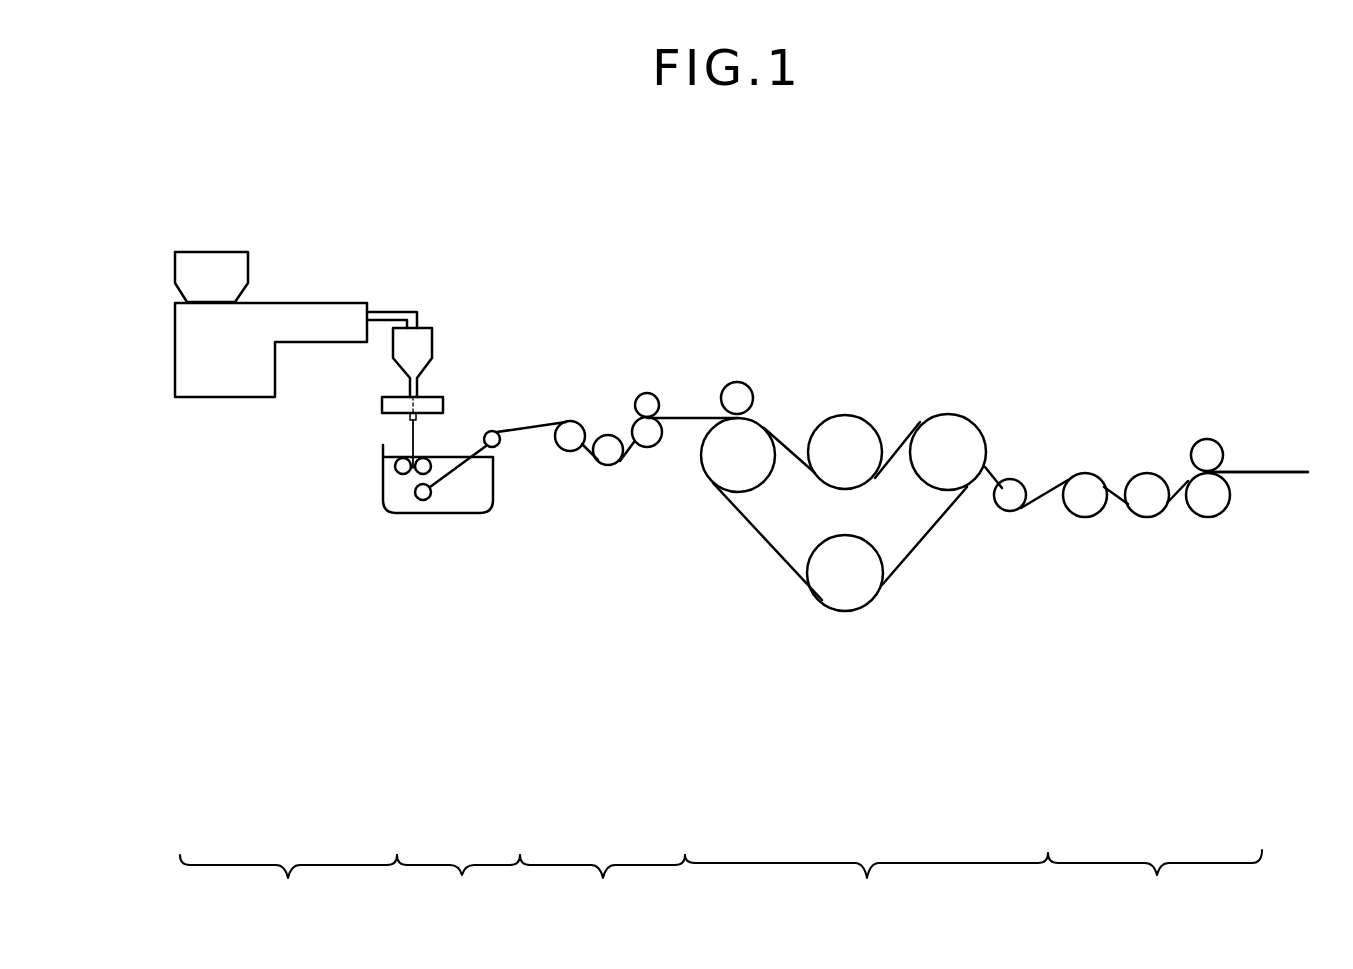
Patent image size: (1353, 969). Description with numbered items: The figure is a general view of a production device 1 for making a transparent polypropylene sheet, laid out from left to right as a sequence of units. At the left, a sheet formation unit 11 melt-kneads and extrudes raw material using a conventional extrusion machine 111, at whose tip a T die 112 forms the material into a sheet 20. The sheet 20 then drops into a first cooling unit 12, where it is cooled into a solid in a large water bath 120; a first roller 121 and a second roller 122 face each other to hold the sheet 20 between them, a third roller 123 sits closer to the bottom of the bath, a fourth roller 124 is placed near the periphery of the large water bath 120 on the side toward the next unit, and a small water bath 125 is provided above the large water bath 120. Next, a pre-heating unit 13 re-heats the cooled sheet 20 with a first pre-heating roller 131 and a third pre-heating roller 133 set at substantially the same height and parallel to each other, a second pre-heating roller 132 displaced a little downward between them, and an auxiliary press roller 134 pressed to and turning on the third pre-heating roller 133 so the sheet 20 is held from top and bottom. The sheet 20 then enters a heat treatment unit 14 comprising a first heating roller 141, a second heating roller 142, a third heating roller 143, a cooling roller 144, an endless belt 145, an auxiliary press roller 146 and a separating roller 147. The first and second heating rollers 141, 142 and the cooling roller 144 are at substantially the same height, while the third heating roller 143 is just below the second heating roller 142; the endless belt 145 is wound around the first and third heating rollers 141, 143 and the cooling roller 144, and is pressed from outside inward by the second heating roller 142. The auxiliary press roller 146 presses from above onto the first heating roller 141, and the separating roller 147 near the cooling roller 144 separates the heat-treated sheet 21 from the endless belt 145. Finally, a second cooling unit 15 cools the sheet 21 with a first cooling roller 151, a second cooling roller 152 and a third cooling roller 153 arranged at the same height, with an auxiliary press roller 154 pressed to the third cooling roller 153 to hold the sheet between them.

The production device 1 is at (1212, 190).
The sheet formation unit 11 is at (288, 885).
The first cooling unit 12 is at (458, 885).
The pre-heating unit 13 is at (602, 885).
The heat treatment unit 14 is at (866, 883).
The second cooling unit 15 is at (1155, 881).
The sheet 20 is at (537, 423).
The sheet 21 is at (1297, 470).
The extrusion machine 111 is at (318, 313).
The T die 112 is at (397, 353).
The large water bath 120 is at (473, 513).
The first roller 121 is at (400, 474).
The second roller 122 is at (433, 460).
The third roller 123 is at (422, 498).
The fourth roller 124 is at (500, 447).
The small water bath 125 is at (428, 397).
The first pre-heating roller 131 is at (570, 430).
The second pre-heating roller 132 is at (608, 440).
The third pre-heating roller 133 is at (645, 445).
The auxiliary press roller 134 is at (645, 400).
The first heating roller 141 is at (758, 442).
The second heating roller 142 is at (857, 433).
The third heating roller 143 is at (843, 602).
The cooling roller 144 is at (953, 433).
The endless belt 145 is at (772, 553).
The auxiliary press roller 146 is at (737, 390).
The separating roller 147 is at (1010, 490).
The first cooling roller 151 is at (1082, 508).
The second cooling roller 152 is at (1147, 507).
The third cooling roller 153 is at (1210, 507).
The auxiliary press roller 154 is at (1210, 452).